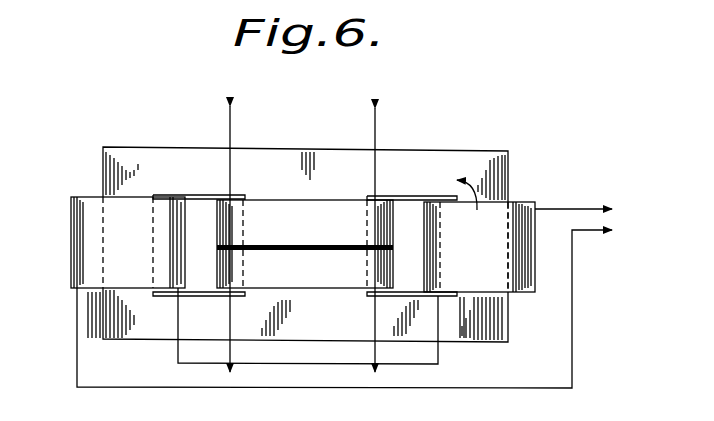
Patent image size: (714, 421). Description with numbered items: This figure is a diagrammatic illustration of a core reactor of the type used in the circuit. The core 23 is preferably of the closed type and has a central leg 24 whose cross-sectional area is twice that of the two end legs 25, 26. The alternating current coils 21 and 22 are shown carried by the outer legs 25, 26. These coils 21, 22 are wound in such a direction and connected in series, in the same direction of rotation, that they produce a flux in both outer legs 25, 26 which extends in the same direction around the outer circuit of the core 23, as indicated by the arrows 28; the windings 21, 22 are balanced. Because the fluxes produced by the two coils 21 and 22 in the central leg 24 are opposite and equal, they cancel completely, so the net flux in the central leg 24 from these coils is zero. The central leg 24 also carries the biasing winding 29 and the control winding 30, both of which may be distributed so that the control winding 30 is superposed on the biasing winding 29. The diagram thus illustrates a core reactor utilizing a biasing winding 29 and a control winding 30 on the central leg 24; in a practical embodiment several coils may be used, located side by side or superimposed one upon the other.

The alternating current coil 21 is at (72, 270).
The alternating current coil 22 is at (535, 262).
The core 23 is at (177, 150).
The central leg 24 is at (373, 237).
The end leg 25 is at (105, 292).
The end leg 26 is at (505, 296).
The arrows 28 is at (137, 292).
The biasing winding 29 is at (262, 275).
The control winding 30 is at (397, 212).